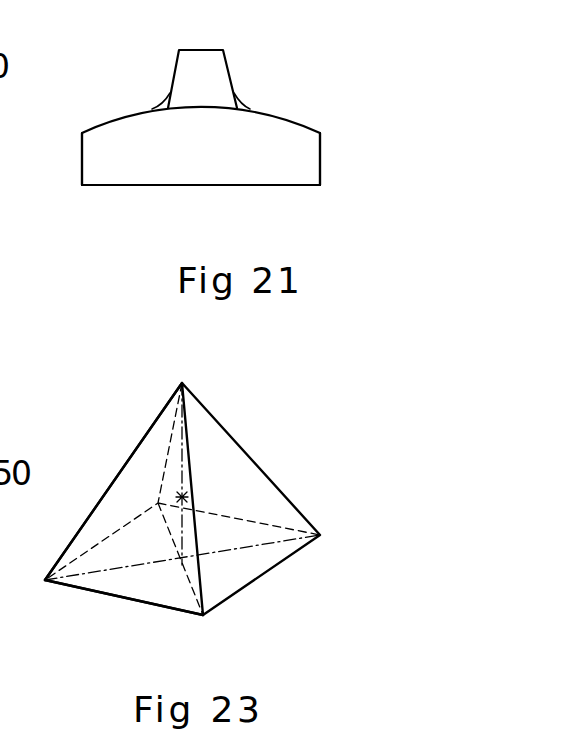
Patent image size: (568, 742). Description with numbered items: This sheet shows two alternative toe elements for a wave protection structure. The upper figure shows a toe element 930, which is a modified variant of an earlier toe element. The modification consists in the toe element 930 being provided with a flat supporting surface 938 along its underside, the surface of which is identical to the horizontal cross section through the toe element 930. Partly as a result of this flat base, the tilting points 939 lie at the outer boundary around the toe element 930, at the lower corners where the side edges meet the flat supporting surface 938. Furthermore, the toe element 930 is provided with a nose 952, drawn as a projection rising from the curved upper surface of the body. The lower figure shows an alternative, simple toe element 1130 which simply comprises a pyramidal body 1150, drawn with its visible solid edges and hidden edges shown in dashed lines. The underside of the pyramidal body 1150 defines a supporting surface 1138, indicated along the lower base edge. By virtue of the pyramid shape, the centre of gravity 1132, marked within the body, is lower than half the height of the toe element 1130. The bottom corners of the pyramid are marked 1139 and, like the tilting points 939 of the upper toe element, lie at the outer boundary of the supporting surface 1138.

In FIG. 21, the toe element 930 is at (263, 44).
In FIG. 21, the nose 952 is at (148, 82).
In FIG. 21, the flat supporting surface 938 is at (165, 199).
In FIG. 21, the tilting points 939 is at (69, 193).
In FIG. 23, the toe element 1130 is at (275, 451).
In FIG. 23, the pyramidal body 1150 is at (124, 427).
In FIG. 23, the centre of gravity 1132 is at (190, 495).
In FIG. 23, the supporting surface 1138 is at (123, 604).
In FIG. 23, the vertices 1139 is at (40, 594).